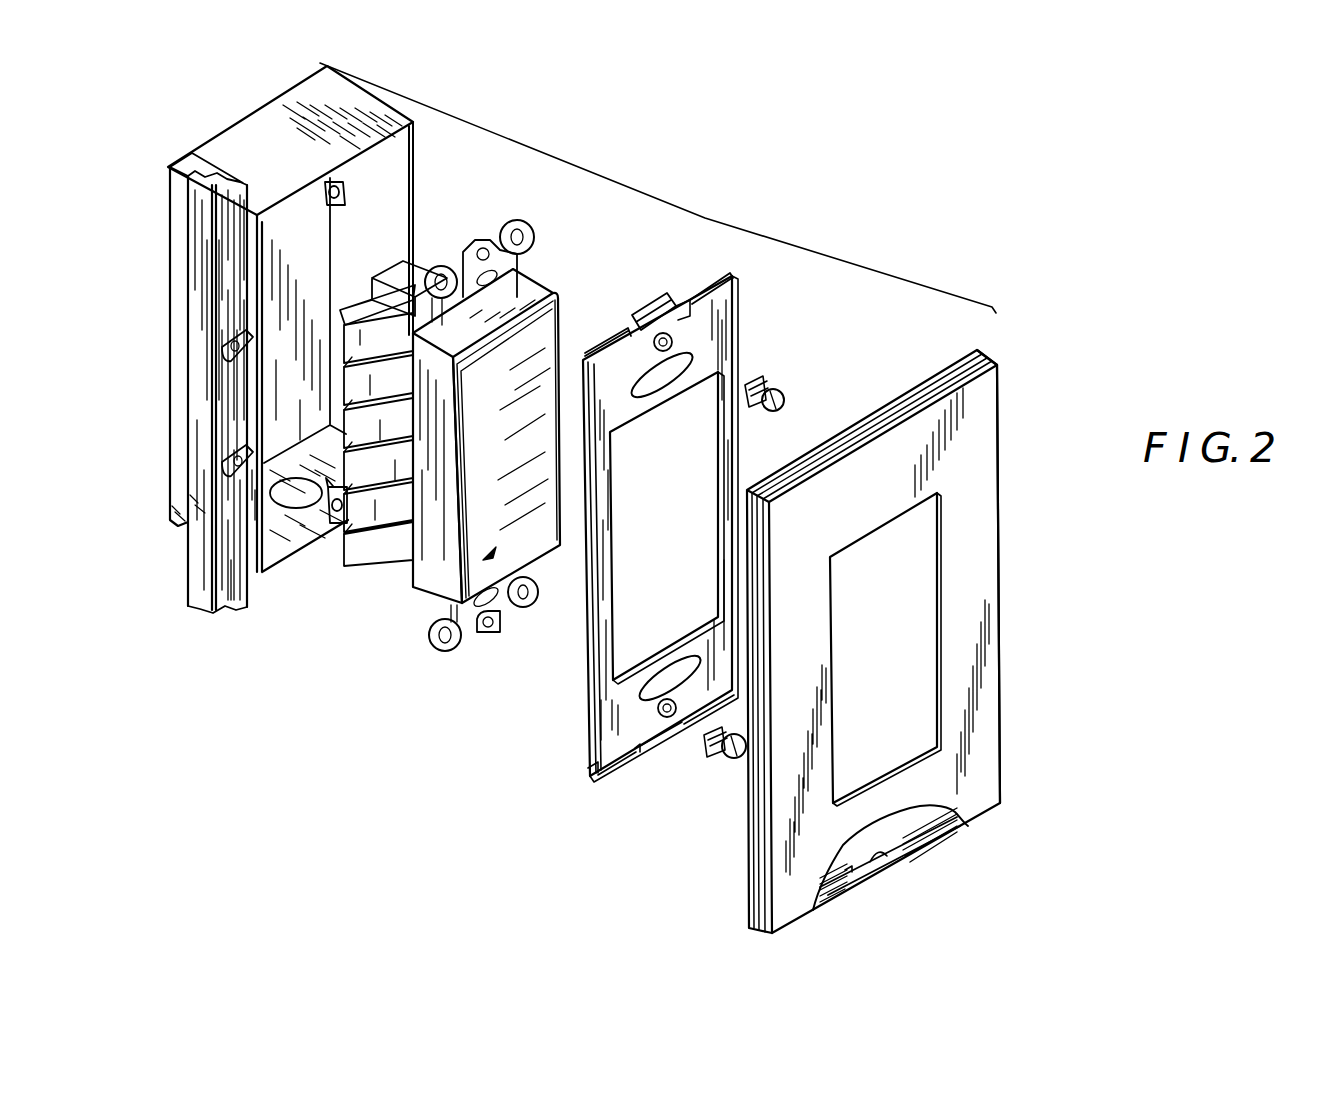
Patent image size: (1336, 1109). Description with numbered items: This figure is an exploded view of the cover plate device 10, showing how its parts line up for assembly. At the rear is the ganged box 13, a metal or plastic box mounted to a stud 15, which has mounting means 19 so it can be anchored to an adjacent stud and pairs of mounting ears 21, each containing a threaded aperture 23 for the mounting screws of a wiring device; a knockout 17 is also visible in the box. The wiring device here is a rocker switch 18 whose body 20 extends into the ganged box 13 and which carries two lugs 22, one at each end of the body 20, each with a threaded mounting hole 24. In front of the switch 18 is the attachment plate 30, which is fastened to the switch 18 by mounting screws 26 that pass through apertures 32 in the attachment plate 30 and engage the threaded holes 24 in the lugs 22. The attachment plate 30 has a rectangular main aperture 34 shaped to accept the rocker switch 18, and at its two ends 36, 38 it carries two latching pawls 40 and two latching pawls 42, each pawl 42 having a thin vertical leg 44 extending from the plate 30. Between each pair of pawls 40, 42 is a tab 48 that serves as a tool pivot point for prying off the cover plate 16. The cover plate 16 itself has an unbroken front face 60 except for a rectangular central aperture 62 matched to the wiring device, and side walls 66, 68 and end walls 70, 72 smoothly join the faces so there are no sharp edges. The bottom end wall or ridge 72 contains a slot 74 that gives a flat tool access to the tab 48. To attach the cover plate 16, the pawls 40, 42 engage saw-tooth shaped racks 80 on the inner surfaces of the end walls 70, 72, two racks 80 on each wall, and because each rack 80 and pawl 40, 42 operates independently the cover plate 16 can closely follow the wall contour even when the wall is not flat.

The cover plate device 10 is at (577, 898).
The ganged box 13 is at (245, 130).
The stud 15 is at (200, 552).
The cover plate 16 is at (995, 754).
The knockout 17 is at (297, 508).
The rocker switch 18 is at (451, 602).
The mounting means 19 is at (247, 446).
The body 20 is at (396, 540).
The mounting ears 21 is at (342, 190).
The lugs 22 is at (466, 266).
The threaded aperture 23 is at (334, 186).
The threaded mounting holes 24 is at (503, 268).
The mounting screws 26 is at (770, 398).
The attachment plate 30 is at (600, 740).
The apertures 32 is at (673, 348).
The main aperture 34 is at (615, 612).
The end 36 is at (639, 748).
The end 38 is at (687, 303).
The latching pawls 40 is at (622, 772).
The latching pawls 42 is at (615, 350).
The vertical leg 44 is at (590, 777).
The tab 48 is at (641, 313).
The front face 60 is at (984, 815).
The central aperture 62 is at (935, 630).
The side wall 66 is at (993, 353).
The side wall 68 is at (749, 886).
The end wall 70 is at (963, 360).
The end wall 72 is at (870, 880).
The slot 74 is at (893, 870).
The saw-tooth shaped racks 80 is at (945, 835).